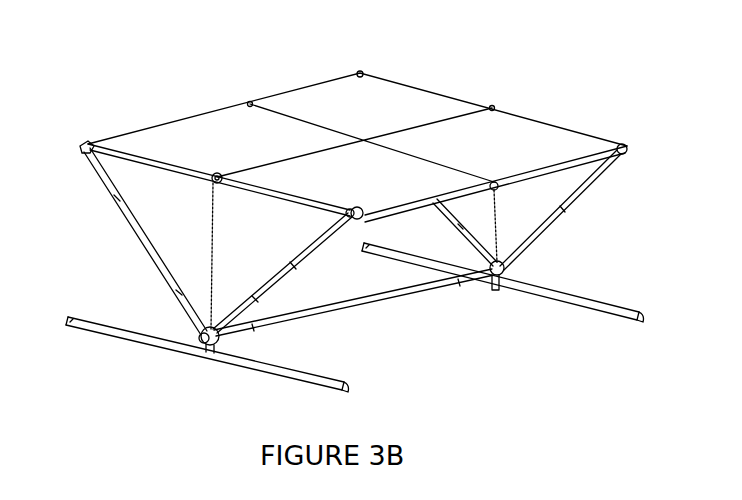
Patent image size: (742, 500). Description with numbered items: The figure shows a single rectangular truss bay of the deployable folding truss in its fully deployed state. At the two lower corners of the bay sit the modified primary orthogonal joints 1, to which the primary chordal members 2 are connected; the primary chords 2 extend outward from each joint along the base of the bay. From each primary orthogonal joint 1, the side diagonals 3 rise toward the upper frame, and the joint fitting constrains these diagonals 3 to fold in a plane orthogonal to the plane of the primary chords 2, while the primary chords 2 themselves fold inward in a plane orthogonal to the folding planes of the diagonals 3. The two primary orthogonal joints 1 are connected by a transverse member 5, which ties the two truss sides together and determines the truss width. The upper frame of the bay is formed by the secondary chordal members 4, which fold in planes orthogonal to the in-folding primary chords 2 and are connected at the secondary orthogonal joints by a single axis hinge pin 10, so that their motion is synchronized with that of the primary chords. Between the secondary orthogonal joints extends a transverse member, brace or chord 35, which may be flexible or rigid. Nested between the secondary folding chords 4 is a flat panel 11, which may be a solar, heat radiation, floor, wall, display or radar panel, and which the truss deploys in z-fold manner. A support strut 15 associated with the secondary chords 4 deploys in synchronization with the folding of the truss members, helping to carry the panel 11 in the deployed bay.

The primary orthogonal joint 1 is at (521, 273).
The primary chordal member 2 is at (148, 342).
The side diagonal 3 is at (153, 261).
The secondary chordal member 4 is at (190, 173).
The transverse member 5 is at (373, 303).
The single axis hinge pin 10 is at (80, 149).
The panel 11 is at (495, 145).
The support strut 15 is at (213, 250).
The transverse member 35 is at (568, 168).